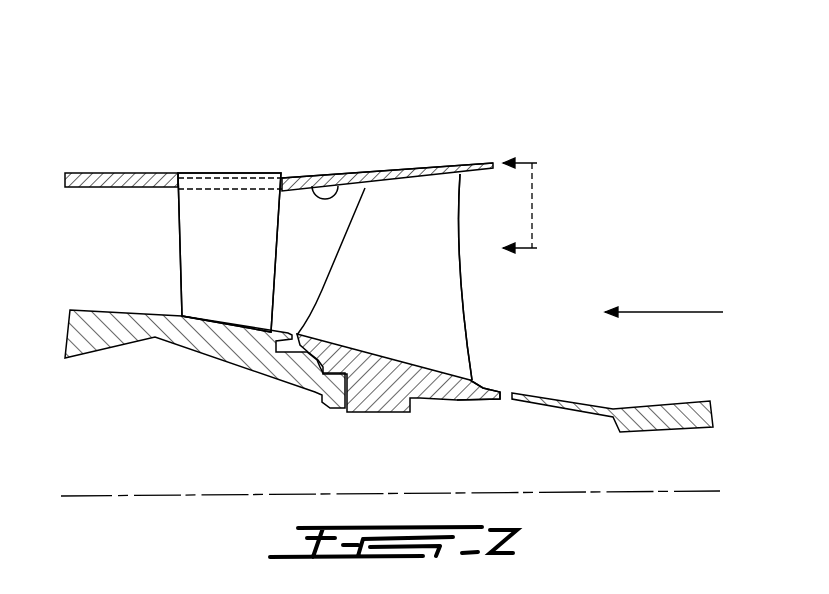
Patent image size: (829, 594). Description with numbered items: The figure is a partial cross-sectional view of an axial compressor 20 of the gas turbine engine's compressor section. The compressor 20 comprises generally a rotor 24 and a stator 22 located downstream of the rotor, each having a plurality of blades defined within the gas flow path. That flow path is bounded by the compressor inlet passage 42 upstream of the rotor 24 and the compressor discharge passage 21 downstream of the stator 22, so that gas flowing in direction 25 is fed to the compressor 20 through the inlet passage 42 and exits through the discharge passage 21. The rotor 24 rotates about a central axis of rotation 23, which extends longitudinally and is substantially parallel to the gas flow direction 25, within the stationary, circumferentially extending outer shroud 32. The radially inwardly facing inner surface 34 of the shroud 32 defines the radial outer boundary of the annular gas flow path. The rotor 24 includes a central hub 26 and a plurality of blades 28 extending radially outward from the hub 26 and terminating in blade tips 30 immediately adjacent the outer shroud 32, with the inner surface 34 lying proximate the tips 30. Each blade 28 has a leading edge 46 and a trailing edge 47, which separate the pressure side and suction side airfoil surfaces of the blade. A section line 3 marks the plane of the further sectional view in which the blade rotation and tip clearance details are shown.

The section line 3 is at (526, 205).
The axial compressor 20 is at (270, 152).
The compressor discharge passage 21 is at (114, 255).
The stator 22 is at (197, 218).
The central axis of rotation 23 is at (145, 496).
The rotor 24 is at (483, 362).
The gas flow direction 25 is at (662, 312).
The central hub 26 is at (377, 390).
The blade 28 is at (437, 312).
The blade tip 30 is at (433, 198).
The outer shroud 32 is at (343, 172).
The inner surface 34 is at (312, 177).
The compressor inlet passage 42 is at (704, 285).
The leading edge 46 is at (470, 340).
The trailing edge 47 is at (317, 295).